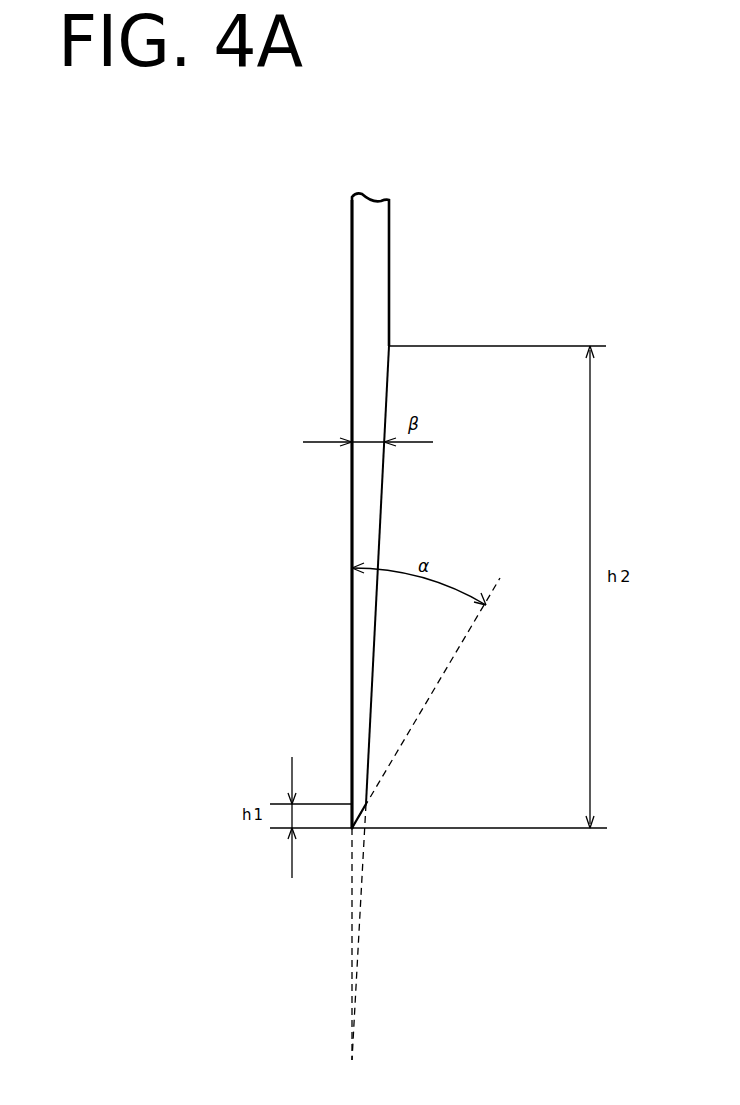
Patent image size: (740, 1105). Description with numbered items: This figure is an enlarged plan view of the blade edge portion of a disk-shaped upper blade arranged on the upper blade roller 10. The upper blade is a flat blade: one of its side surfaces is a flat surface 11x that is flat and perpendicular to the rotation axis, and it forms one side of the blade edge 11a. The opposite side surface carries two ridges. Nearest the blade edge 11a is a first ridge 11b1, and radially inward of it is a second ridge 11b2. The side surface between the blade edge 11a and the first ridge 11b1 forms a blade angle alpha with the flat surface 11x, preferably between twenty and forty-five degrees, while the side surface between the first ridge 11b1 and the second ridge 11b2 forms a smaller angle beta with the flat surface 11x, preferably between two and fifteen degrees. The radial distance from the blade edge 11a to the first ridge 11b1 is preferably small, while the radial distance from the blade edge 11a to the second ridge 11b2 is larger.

The upper blade roller 10 is at (389, 264).
The flat surface 11x is at (352, 291).
The second ridge 11b2 is at (392, 346).
The first ridge 11b1 is at (369, 805).
The blade edge 11a is at (356, 832).